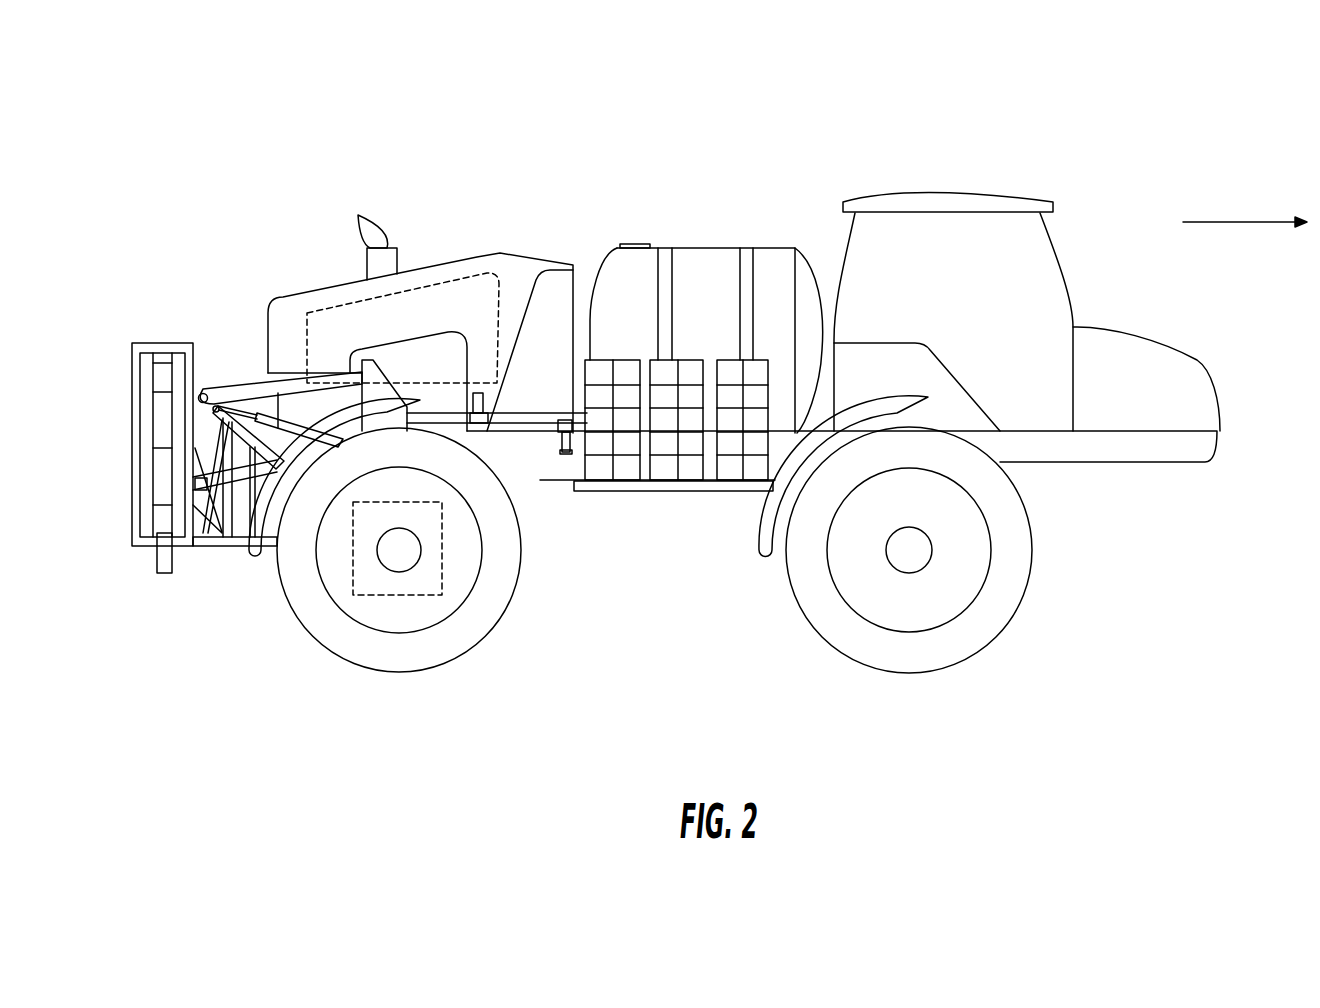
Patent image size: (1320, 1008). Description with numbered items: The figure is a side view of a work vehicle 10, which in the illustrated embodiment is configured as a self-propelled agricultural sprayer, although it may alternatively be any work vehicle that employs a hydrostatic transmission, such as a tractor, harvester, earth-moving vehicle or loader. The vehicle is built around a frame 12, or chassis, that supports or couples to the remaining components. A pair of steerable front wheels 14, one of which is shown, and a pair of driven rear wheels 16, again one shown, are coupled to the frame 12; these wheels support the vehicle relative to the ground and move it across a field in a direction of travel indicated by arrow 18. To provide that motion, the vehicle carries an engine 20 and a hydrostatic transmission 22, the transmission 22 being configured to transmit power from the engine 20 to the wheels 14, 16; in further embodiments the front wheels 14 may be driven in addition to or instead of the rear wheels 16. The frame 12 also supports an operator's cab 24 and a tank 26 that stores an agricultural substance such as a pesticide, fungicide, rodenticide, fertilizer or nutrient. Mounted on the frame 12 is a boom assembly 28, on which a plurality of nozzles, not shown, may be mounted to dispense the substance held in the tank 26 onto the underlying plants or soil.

The work vehicle 10 is at (183, 166).
The frame 12 is at (1117, 463).
The front wheels 14 is at (1007, 623).
The rear wheels 16 is at (312, 623).
The direction of travel 18 is at (1248, 222).
The engine 20 is at (447, 280).
The hydrostatic transmission 22 is at (420, 600).
The operator's cab 24 is at (1018, 200).
The tank 26 is at (700, 246).
The boom assembly 28 is at (161, 326).